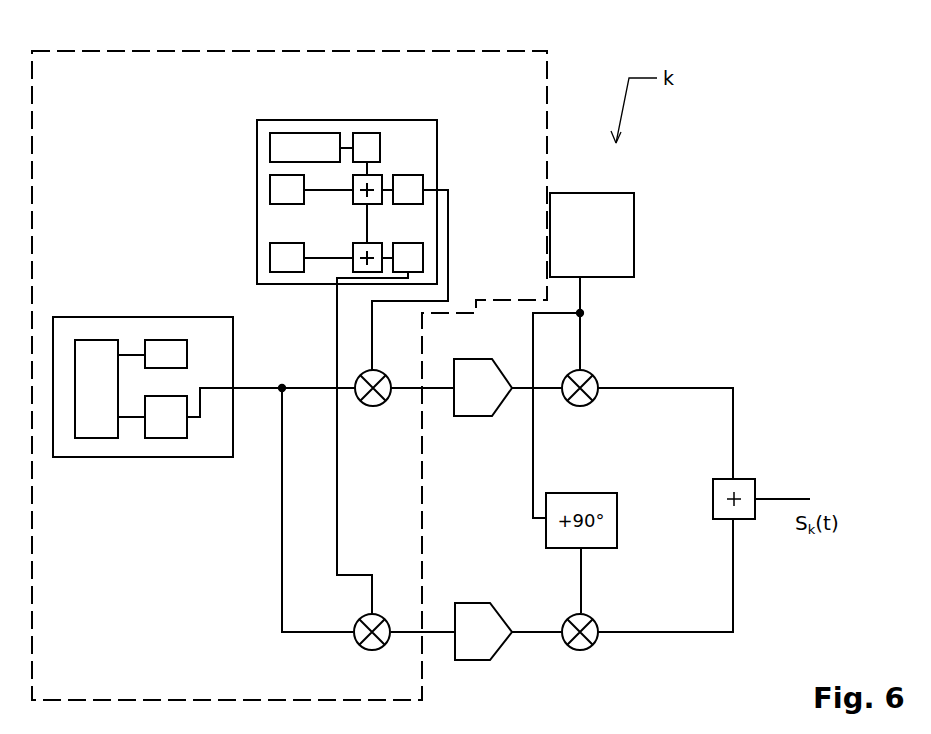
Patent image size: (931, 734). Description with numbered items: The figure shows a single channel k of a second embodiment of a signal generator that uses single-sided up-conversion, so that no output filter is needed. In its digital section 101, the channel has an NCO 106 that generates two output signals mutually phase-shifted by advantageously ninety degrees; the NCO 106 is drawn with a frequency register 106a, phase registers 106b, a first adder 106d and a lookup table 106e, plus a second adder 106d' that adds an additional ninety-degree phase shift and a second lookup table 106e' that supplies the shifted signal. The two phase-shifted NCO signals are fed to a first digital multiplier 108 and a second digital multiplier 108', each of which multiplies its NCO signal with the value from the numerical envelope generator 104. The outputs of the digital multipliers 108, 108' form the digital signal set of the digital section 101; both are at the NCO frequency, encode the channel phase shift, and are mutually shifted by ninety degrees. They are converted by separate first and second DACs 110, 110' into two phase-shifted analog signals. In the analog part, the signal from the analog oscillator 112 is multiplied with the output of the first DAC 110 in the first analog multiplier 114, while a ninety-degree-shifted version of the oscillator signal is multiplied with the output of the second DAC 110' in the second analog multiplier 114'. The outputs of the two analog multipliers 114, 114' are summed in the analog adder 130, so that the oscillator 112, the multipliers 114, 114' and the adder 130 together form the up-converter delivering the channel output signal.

The digital section 101 is at (272, 51).
The numerical envelope generator 104 is at (163, 316).
The NCO 106 is at (356, 198).
The NCO frequency register 106a is at (307, 132).
The phase offset registers 106b is at (268, 252).
The phase adder 106d is at (422, 144).
The second adder 106d' is at (292, 277).
The lookup table 106e is at (463, 164).
The second lookup table 106e' is at (465, 233).
The first digital multiplier 108 is at (341, 405).
The second digital multiplier 108' is at (339, 650).
The first DAC 110 is at (471, 369).
The second DAC 110' is at (470, 613).
The analog oscillator 112 is at (636, 232).
The first analog multiplier 114 is at (612, 371).
The second analog multiplier 114' is at (615, 615).
The analog adder 130 is at (746, 479).